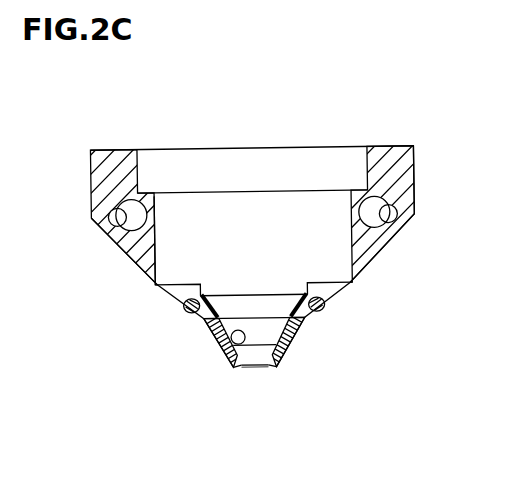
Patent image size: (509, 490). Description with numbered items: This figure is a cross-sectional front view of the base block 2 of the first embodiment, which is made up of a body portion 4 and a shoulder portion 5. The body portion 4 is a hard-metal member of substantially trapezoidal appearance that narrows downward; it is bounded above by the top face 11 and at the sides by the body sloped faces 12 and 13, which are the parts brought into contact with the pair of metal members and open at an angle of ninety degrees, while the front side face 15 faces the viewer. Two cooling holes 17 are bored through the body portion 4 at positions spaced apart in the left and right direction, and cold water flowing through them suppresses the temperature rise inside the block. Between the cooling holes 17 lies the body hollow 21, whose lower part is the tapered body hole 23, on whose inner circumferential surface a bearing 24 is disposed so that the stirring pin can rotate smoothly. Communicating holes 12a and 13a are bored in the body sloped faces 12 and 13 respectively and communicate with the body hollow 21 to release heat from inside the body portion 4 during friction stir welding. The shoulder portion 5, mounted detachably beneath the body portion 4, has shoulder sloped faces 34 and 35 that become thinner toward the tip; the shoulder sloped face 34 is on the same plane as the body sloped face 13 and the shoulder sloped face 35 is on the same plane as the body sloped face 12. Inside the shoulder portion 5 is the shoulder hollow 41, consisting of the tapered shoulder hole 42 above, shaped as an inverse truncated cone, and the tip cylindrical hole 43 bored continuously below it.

The base block 2 is at (331, 129).
The body portion 4 is at (388, 146).
The shoulder portion 5 is at (273, 372).
The top face 11 is at (107, 148).
The body sloped face 12 is at (115, 236).
The communicating hole 12a is at (165, 287).
The body sloped face 13 is at (393, 240).
The communicating hole 13a is at (340, 287).
The front side face 15 is at (152, 274).
The cooling hole 17 is at (104, 216).
The body hollow 21 is at (159, 231).
The tapered body hole 23 is at (188, 313).
The bearing 24 is at (319, 312).
The shoulder sloped face 34 is at (293, 350).
The shoulder sloped face 35 is at (212, 347).
The shoulder hollow 41 is at (260, 366).
The tapered shoulder hole 42 is at (238, 357).
The tip cylindrical hole 43 is at (268, 363).